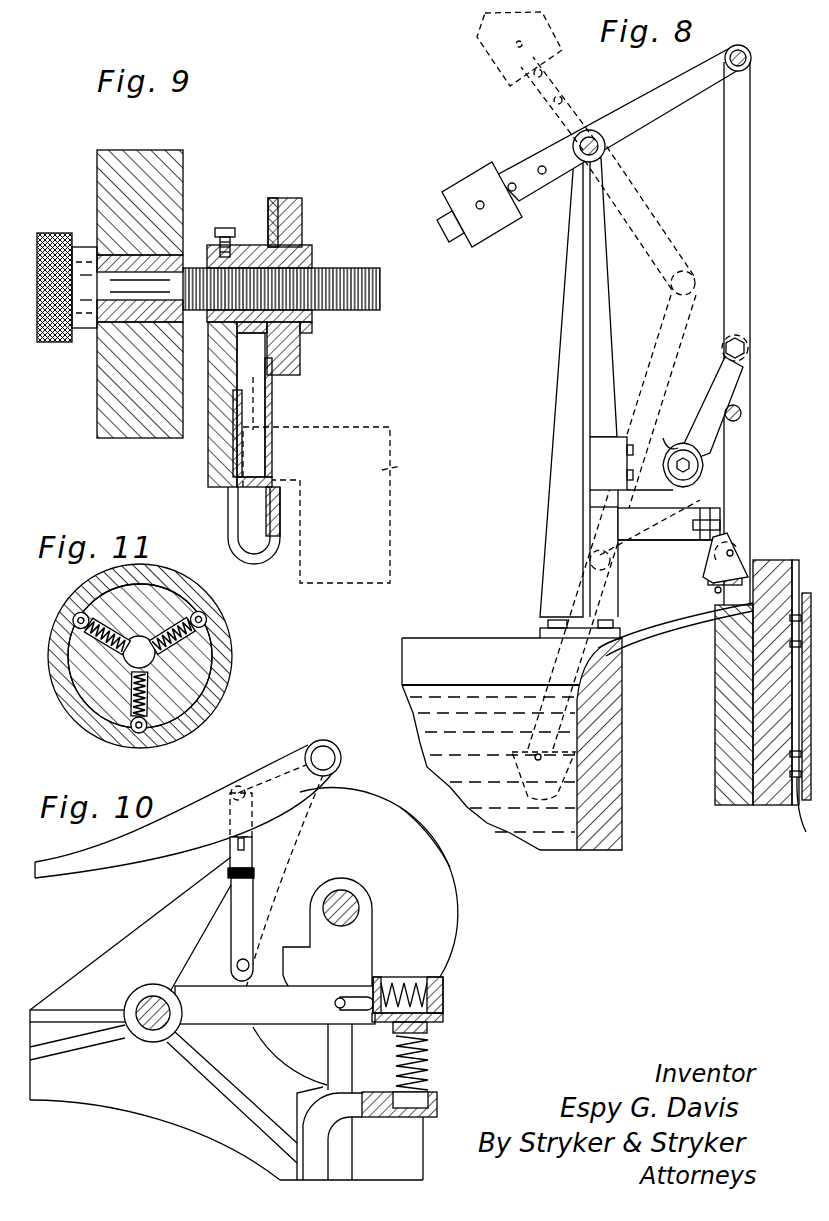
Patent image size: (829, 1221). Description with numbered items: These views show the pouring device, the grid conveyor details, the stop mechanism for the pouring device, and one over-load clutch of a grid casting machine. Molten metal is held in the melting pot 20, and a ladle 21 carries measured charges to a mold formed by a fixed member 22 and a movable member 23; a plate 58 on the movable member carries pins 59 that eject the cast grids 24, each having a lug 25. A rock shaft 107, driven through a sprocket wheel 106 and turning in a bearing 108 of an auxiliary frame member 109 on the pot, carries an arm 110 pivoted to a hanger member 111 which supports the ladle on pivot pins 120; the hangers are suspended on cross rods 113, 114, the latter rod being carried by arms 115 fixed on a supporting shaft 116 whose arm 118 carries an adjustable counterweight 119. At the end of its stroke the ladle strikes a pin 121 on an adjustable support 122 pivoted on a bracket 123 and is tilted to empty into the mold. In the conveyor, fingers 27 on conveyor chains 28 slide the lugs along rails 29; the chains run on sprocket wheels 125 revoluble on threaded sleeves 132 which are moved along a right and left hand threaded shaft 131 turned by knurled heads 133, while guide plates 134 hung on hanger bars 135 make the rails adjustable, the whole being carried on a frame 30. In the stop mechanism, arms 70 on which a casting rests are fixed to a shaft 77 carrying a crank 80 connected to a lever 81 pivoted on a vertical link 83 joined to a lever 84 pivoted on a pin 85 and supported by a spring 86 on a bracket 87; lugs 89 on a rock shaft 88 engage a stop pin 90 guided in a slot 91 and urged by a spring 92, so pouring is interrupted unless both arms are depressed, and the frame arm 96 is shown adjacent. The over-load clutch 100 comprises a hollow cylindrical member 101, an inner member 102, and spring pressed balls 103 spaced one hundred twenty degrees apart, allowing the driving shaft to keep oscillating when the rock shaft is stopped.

In FIG. 8, the melting pot 20 is at (492, 648).
In FIG. 8, the ladle 21 is at (528, 790).
In FIG. 8, the fixed mold member 22 is at (722, 675).
In FIG. 8, the movable mold member 23 is at (783, 563).
In FIG. 9, the grid 24 is at (392, 470).
In FIG. 9, the lug 25 is at (248, 405).
In FIG. 9, the finger 27 is at (272, 392).
In FIG. 9, the conveyor chain 28 is at (268, 206).
In FIG. 9, the rail 29 is at (280, 505).
In FIG. 9, the frame 30 is at (103, 382).
In FIG. 8, the plate 58 is at (804, 833).
In FIG. 8, the pin 59 is at (797, 592).
In FIG. 10, the arm 70 is at (125, 850).
In FIG. 10, the shaft 77 is at (336, 758).
In FIG. 10, the crank 80 is at (272, 768).
In FIG. 10, the lever 81 is at (230, 818).
In FIG. 10, the link 83 is at (253, 904).
In FIG. 10, the lever 84 is at (215, 1005).
In FIG. 10, the pin 85 is at (145, 1020).
In FIG. 10, the spring 86 is at (428, 1050).
In FIG. 10, the bracket 87 is at (437, 1100).
In FIG. 10, the rock shaft 88 is at (358, 895).
In FIG. 10, the lug 89 is at (360, 937).
In FIG. 10, the stop pin 90 is at (340, 997).
In FIG. 10, the slot 91 is at (352, 1008).
In FIG. 10, the spring 92 is at (408, 972).
In FIG. 10, the frame arm 96 is at (68, 1012).
In FIG. 11, the overload clutch 100 is at (236, 640).
In FIG. 10, the overload clutch 100 is at (460, 896).
In FIG. 11, the hollow cylindrical member 101 is at (214, 688).
In FIG. 11, the inner member 102 is at (100, 706).
In FIG. 11, the ball 103 is at (78, 617).
In FIG. 8, the sprocket wheel 106 is at (700, 481).
In FIG. 8, the rock shaft 107 is at (688, 458).
In FIG. 8, the bearing 108 is at (672, 437).
In FIG. 8, the auxiliary frame member 109 is at (562, 396).
In FIG. 8, the arm 110 is at (704, 410).
In FIG. 8, the hanger member 111 is at (724, 183).
In FIG. 8, the cross rod 113 is at (742, 413).
In FIG. 8, the cross rod 114 is at (751, 55).
In FIG. 8, the arm 115 is at (665, 91).
In FIG. 8, the supporting shaft 116 is at (573, 145).
In FIG. 8, the arm 118 is at (532, 192).
In FIG. 8, the counterweight 119 is at (472, 185).
In FIG. 8, the pivot pin 120 is at (727, 553).
In FIG. 8, the pin 121 is at (745, 565).
In FIG. 8, the adjustable support 122 is at (722, 528).
In FIG. 8, the bracket 123 is at (652, 541).
In FIG. 9, the sprocket wheel 125 is at (282, 232).
In FIG. 9, the shaft 131 is at (330, 268).
In FIG. 9, the threaded sleeve 132 is at (296, 318).
In FIG. 9, the knurled head 133 is at (83, 250).
In FIG. 9, the guide plate 134 is at (232, 440).
In FIG. 9, the hanger bar 135 is at (216, 430).